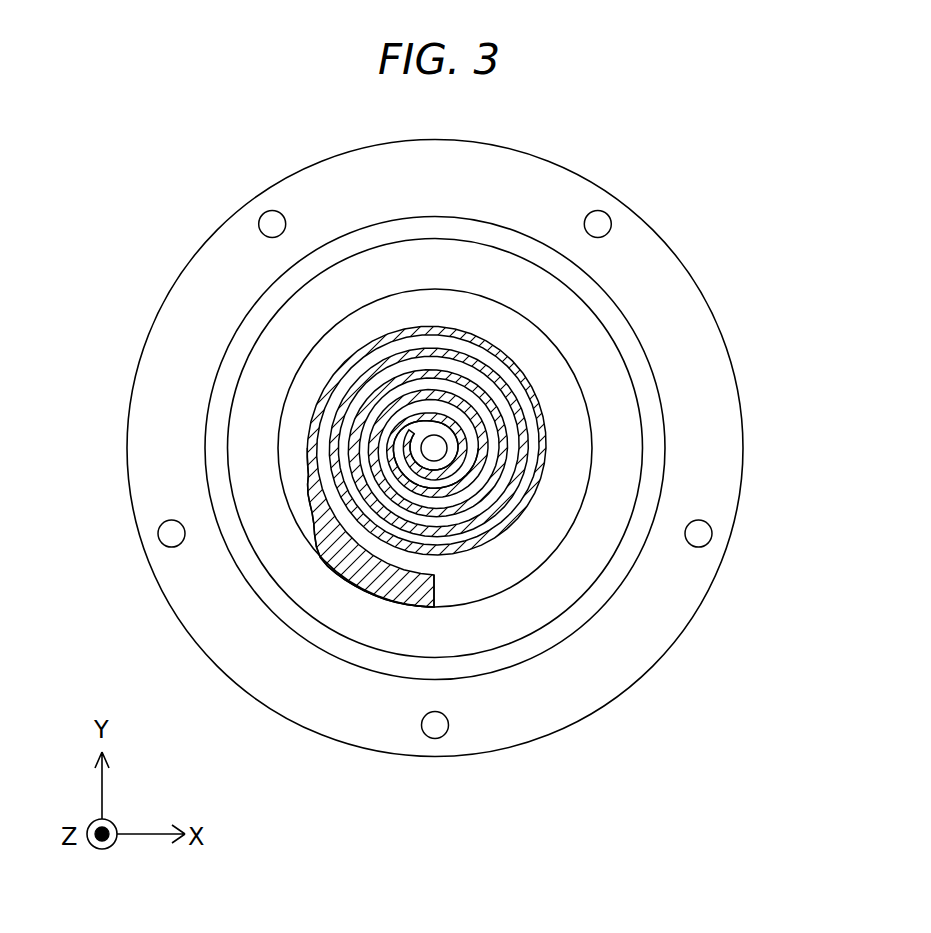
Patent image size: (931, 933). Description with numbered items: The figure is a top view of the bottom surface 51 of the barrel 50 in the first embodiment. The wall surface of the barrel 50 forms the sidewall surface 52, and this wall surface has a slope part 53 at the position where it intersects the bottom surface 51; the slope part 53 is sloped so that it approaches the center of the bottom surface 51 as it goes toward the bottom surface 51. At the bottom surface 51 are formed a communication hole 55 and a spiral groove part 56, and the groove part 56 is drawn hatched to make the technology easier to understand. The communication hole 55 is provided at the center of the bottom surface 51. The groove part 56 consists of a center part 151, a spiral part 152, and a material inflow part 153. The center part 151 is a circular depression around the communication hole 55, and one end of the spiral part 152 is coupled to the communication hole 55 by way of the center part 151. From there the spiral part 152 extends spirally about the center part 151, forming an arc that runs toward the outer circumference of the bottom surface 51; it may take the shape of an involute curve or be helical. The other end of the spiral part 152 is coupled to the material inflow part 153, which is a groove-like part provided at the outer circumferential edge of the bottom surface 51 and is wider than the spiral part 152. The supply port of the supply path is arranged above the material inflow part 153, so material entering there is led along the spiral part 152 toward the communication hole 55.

The barrel 50 is at (739, 167).
The bottom surface 51 is at (303, 396).
The sidewall surface 52 is at (232, 496).
The slope part 53 is at (250, 423).
The communication hole 55 is at (438, 449).
The groove part 56 is at (430, 545).
The center part 151 is at (470, 452).
The spiral part 152 is at (470, 550).
The material inflow part 153 is at (434, 608).